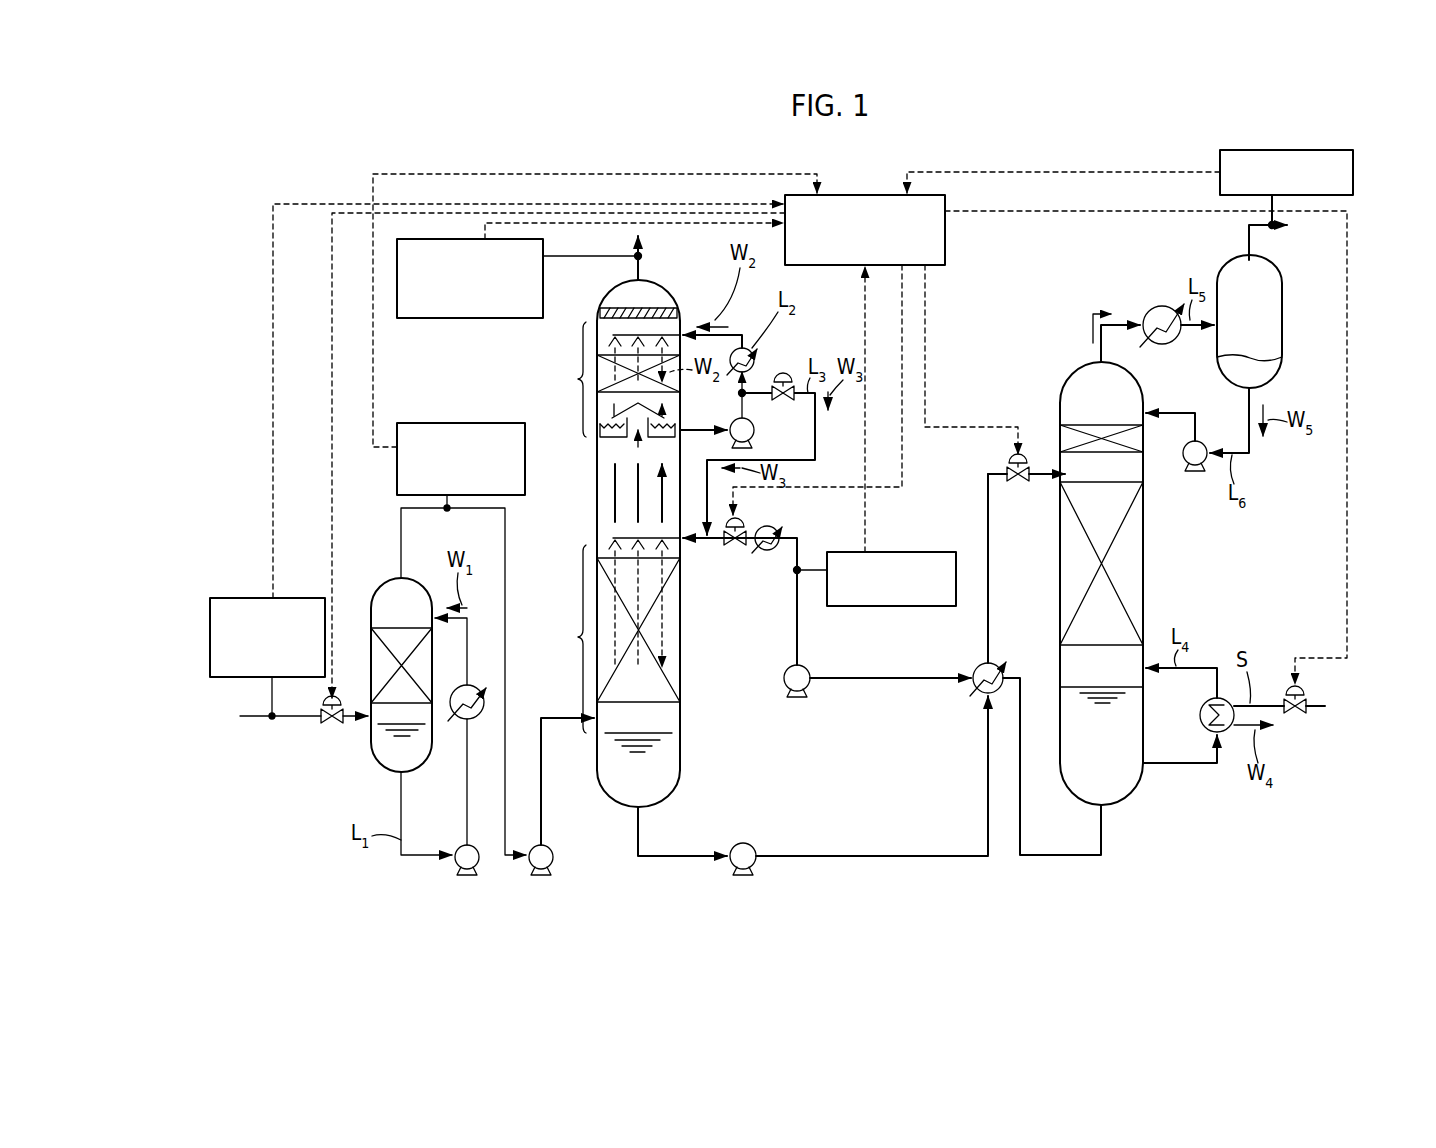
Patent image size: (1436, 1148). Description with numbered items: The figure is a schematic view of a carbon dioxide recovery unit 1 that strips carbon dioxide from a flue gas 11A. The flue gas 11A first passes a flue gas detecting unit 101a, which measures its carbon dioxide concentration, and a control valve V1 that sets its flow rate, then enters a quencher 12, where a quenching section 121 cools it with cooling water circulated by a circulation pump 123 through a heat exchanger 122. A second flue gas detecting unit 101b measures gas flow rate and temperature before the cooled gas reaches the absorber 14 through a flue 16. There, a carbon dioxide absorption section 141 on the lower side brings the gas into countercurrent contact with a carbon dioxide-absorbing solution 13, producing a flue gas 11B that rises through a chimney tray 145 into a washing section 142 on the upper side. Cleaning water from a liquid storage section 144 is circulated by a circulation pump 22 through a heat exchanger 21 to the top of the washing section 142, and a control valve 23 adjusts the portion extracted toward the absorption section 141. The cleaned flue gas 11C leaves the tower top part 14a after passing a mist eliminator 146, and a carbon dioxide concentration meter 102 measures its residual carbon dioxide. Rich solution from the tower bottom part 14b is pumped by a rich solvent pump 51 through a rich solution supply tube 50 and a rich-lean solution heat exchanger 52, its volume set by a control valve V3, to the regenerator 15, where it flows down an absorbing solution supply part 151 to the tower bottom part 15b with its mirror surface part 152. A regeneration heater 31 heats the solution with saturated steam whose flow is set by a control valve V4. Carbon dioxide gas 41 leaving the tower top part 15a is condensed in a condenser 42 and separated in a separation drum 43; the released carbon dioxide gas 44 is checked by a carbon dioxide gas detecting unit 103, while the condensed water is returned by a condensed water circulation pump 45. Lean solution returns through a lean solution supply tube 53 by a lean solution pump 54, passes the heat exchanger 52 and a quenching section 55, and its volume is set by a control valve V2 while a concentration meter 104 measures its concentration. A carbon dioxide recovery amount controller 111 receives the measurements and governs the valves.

The CO2 recovery unit 1 is at (1002, 152).
The flue gas 11A is at (357, 722).
The flue gas from which CO2 has been removed 11B is at (597, 453).
The flue gas 11C is at (630, 245).
The quencher 12 is at (370, 580).
The quenching section 121 is at (371, 645).
The heat exchanger 122 is at (458, 718).
The circulation pump 123 is at (457, 846).
The CO2-absorbing solution 13 is at (665, 650).
The CO2-absorber 14 is at (578, 308).
The tower top part 14a is at (655, 283).
The tower bottom part 14b is at (680, 784).
The CO2 absorption section 141 is at (583, 637).
The washing section 142 is at (583, 379).
The liquid storage section 144 is at (676, 422).
The chimney tray 145 is at (597, 400).
The mist eliminator 146 is at (620, 310).
The CO2-regenerator 15 is at (1155, 560).
The tower top part 15a is at (1068, 372).
The tower bottom part 15b is at (1130, 792).
The CO2-absorbing solution supply part 151 is at (1143, 597).
The mirror surface part 152 is at (1152, 750).
The flue 16 is at (541, 742).
The heat exchanger 21 is at (757, 356).
The circulation pump 22 is at (755, 426).
The control valve 23 is at (784, 374).
The regeneration heater 31 is at (1212, 698).
The CO2 gas 41 is at (1090, 314).
The condenser 42 is at (1167, 345).
The separation drum 43 is at (1282, 326).
The CO2 gas 44 is at (1249, 222).
The condensed water circulation pump 45 is at (1202, 441).
The rich solution supply tube 50 is at (700, 860).
The rich solvent pump 51 is at (740, 843).
The rich-lean solution heat exchanger 52 is at (1000, 660).
The lean solution supply tube 53 is at (1018, 828).
The lean solution pump 54 is at (808, 665).
The quenching section 55 is at (781, 530).
The flue gas detecting unit 101a is at (248, 598).
The flue gas detecting unit 101b is at (424, 423).
The CO2 concentration meter 102 is at (413, 318).
The CO2 gas detecting unit 103 is at (1220, 158).
The concentration meter 104 is at (884, 552).
The CO2 recovery amount controller 111 is at (846, 195).
The control valve V1 is at (340, 700).
The control valve V2 is at (746, 520).
The control valve V3 is at (1026, 457).
The control valve V4 is at (1288, 686).